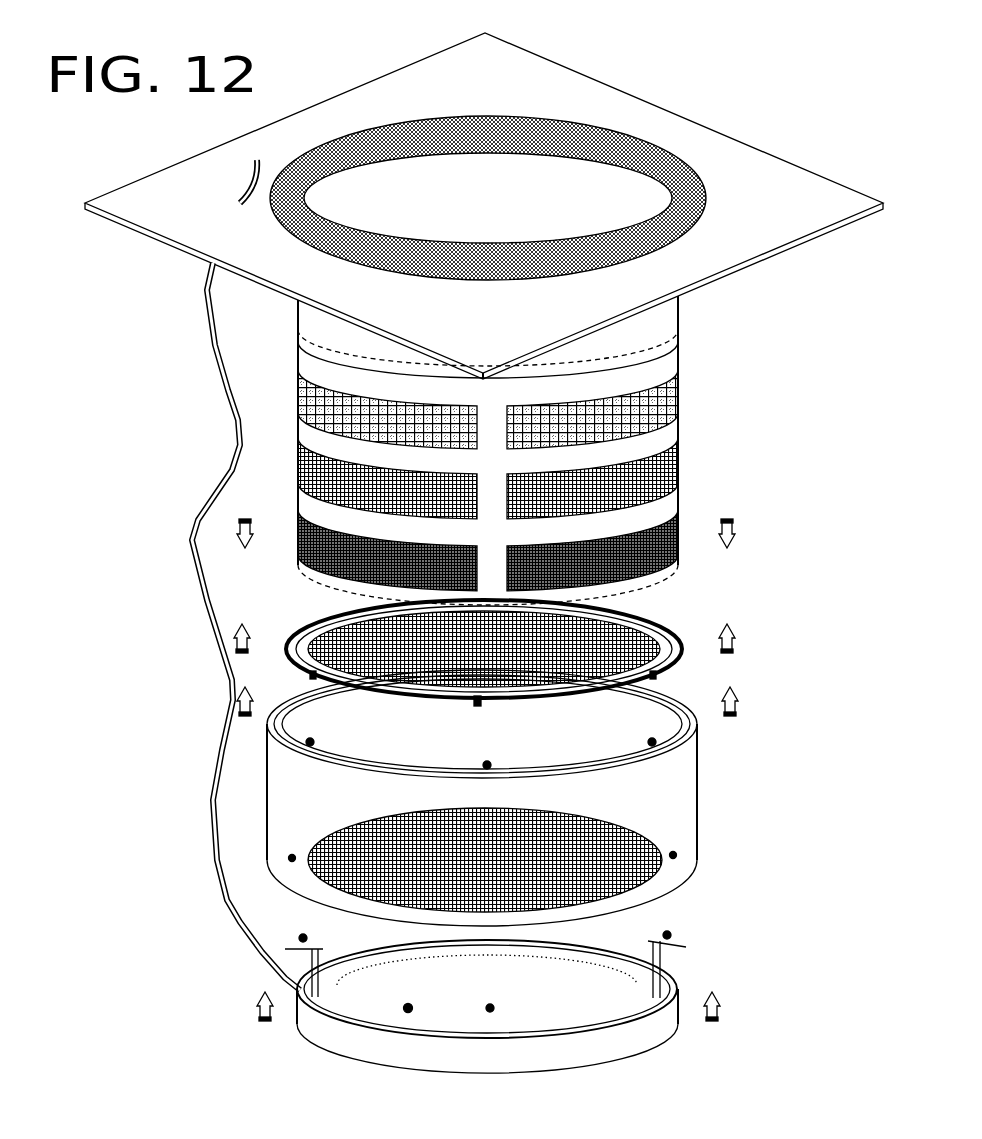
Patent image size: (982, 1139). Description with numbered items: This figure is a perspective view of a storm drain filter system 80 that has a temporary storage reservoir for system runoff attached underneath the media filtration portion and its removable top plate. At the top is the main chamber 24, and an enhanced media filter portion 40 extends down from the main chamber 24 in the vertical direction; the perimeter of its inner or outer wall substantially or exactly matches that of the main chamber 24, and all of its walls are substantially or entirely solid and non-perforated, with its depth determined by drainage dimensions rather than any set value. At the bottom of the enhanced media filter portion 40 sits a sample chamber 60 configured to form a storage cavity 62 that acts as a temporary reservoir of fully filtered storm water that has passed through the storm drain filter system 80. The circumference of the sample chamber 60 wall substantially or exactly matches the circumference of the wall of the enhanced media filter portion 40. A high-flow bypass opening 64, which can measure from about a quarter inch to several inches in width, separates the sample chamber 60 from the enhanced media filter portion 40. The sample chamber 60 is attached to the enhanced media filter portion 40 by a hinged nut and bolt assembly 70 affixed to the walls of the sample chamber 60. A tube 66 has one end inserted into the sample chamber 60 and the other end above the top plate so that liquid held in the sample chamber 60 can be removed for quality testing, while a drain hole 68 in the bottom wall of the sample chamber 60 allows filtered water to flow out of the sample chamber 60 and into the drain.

The main chamber 24 is at (748, 270).
The enhanced media filter portion 40 is at (748, 690).
The sample chamber 60 is at (748, 937).
The storage cavity 62 is at (503, 980).
The high-flow bypass opening 64 is at (337, 924).
The tube 66 is at (408, 1008).
The drain hole 68 is at (490, 1008).
The hinged nut and bolt assembly 70 is at (303, 940).
The storm drain filter system 80 is at (163, 242).